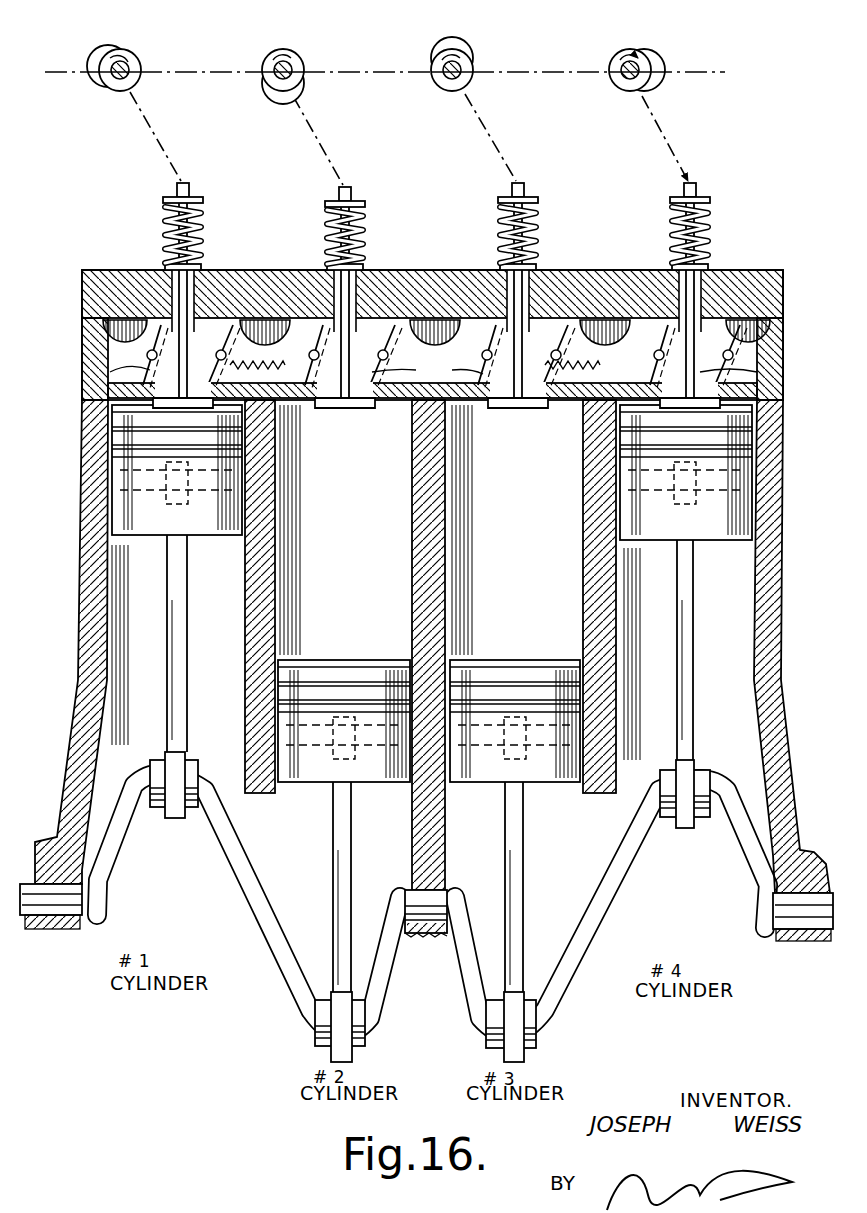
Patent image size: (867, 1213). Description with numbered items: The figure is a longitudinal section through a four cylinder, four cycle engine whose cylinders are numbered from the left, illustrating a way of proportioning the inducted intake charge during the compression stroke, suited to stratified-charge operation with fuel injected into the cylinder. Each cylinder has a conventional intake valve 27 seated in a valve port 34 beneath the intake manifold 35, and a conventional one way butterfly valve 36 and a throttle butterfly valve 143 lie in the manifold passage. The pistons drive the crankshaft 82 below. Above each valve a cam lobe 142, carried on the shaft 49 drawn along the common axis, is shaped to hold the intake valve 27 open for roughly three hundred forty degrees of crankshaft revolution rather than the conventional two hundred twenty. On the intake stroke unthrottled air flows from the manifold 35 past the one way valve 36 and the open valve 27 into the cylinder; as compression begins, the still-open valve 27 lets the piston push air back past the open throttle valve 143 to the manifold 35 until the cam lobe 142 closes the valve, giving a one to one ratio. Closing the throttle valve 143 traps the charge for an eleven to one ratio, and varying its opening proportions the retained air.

The intake valve cam lobe 142 is at (655, 66).
The cam shaft 49 is at (615, 58).
The intake valve 27 is at (697, 193).
The intake manifold 35 is at (745, 320).
The valve port 34 is at (680, 318).
The throttle butterfly valve 143 is at (798, 376).
The one way butterfly valve 36 is at (660, 376).
The crankshaft 82 is at (32, 918).